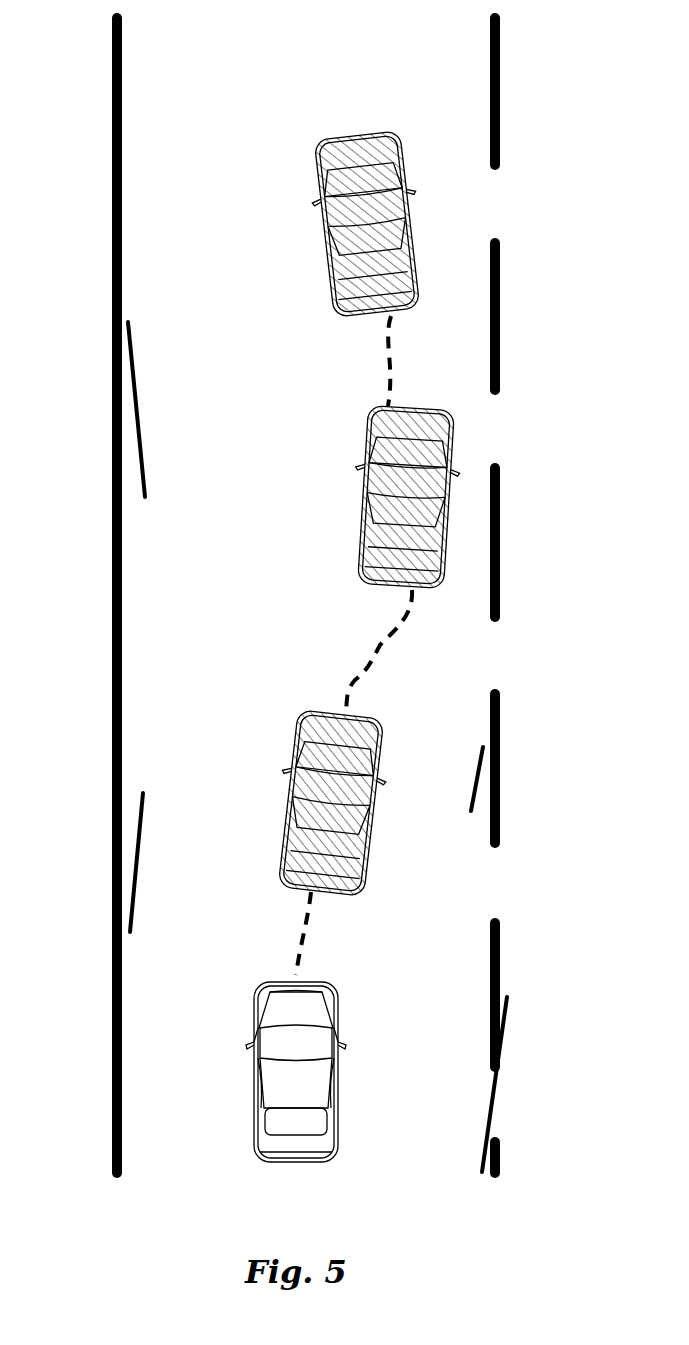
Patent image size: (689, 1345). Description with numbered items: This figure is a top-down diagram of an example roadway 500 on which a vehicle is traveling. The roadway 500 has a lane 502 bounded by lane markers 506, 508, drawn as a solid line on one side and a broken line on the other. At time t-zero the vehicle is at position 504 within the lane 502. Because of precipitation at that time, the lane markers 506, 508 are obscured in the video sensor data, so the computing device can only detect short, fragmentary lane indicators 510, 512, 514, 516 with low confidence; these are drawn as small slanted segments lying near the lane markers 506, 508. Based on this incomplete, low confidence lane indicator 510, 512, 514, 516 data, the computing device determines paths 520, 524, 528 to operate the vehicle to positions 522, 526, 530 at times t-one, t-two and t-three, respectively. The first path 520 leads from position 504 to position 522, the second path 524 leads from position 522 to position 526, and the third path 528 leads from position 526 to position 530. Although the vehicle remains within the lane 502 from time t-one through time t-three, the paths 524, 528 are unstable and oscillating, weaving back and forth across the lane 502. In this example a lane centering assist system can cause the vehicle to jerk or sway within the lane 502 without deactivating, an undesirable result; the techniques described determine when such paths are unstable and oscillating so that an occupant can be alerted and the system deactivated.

The roadway 500 is at (334, 28).
The lane 502 is at (334, 97).
The position 504 is at (336, 1068).
The lane marker 506 is at (112, 1033).
The lane marker 508 is at (498, 965).
The lane indicator 510 is at (490, 1112).
The lane indicator 512 is at (140, 870).
The lane indicator 514 is at (473, 765).
The lane indicator 516 is at (136, 388).
The path 520 is at (308, 920).
The position 522 is at (293, 797).
The path 524 is at (378, 633).
The position 526 is at (362, 500).
The path 528 is at (382, 352).
The position 530 is at (328, 233).